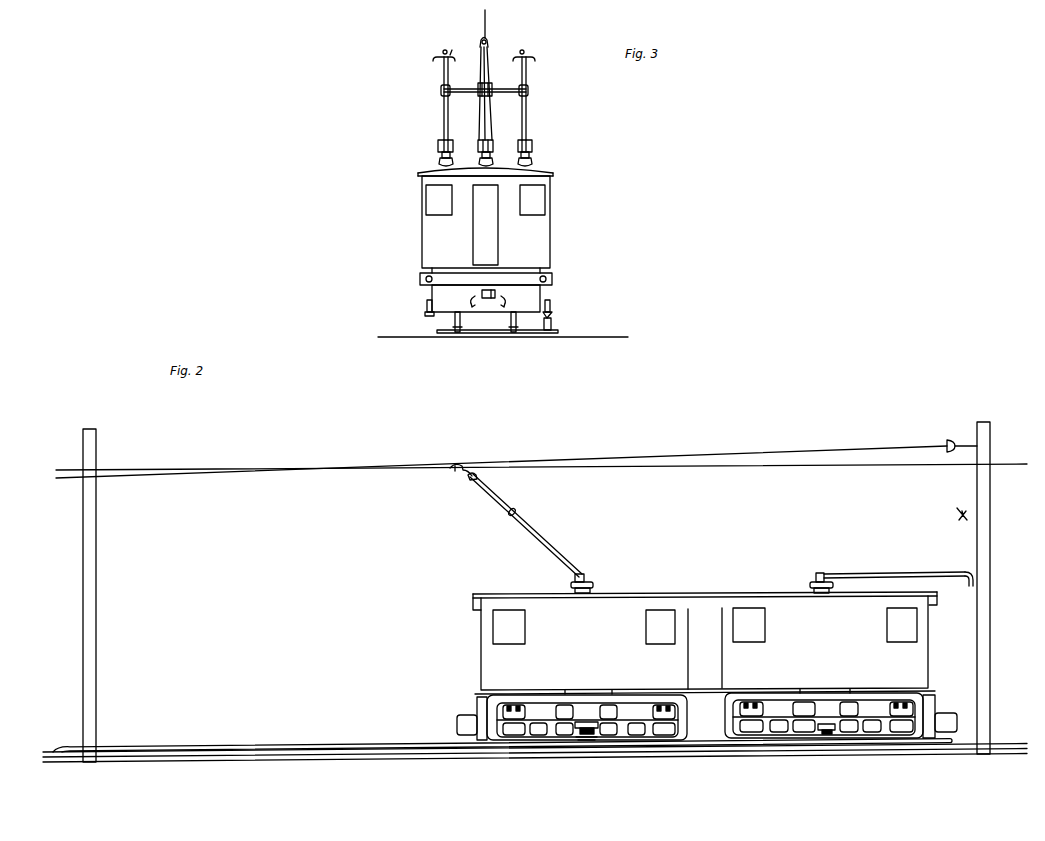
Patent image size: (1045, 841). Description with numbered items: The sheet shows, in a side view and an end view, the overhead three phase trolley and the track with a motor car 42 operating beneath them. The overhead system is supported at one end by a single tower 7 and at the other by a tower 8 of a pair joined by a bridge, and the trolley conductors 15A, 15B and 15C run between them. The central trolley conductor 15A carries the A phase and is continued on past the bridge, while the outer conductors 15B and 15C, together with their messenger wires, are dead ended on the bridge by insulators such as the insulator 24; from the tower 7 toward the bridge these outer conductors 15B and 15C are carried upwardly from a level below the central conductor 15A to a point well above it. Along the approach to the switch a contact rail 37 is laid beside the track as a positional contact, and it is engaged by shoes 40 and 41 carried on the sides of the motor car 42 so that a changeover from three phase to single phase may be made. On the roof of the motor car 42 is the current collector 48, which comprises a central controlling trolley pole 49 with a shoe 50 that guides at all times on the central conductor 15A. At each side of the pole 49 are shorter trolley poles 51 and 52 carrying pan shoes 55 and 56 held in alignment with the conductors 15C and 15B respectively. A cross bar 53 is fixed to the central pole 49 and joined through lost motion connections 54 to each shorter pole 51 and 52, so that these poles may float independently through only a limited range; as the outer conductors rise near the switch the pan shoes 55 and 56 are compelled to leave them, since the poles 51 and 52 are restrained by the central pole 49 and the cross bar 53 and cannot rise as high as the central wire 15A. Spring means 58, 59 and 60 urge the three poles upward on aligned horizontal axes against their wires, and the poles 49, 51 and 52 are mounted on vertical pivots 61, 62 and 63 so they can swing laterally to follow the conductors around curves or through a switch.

In FIG. 2, the tower 7 is at (97, 443).
In FIG. 2, the tower 8 is at (991, 514).
In FIG. 3, the central trolley conductor 15A is at (471, 24).
In FIG. 2, the central trolley conductor 15A is at (57, 468).
In FIG. 3, the trolley conductor 15B is at (442, 50).
In FIG. 3, the trolley conductor 15C is at (526, 50).
In FIG. 2, the trolley conductor 15C is at (62, 480).
In FIG. 2, the insulator 24 is at (954, 440).
In FIG. 2, the contact rail 37 is at (447, 752).
In FIG. 3, the shoe 40 is at (423, 315).
In FIG. 2, the shoe 40 is at (586, 742).
In FIG. 3, the shoe 41 is at (552, 316).
In FIG. 3, the motor car 42 is at (560, 213).
In FIG. 2, the motor car 42 is at (748, 590).
In FIG. 3, the current collector 48 is at (570, 110).
In FIG. 2, the current collector 48 is at (535, 522).
In FIG. 3, the central controlling trolley pole 49 is at (489, 56).
In FIG. 3, the shoe 50 is at (489, 41).
In FIG. 2, the shoe 50 is at (456, 472).
In FIG. 3, the shorter trolley pole 51 is at (443, 80).
In FIG. 3, the shorter trolley pole 52 is at (527, 72).
In FIG. 3, the cross bar 53 is at (470, 92).
In FIG. 3, the lost motion connection 54 is at (440, 92).
In FIG. 2, the lost motion connection 54 is at (509, 514).
In FIG. 3, the pan shoe 55 is at (432, 57).
In FIG. 2, the pan shoe 55 is at (471, 481).
In FIG. 3, the pan shoe 56 is at (536, 57).
In FIG. 3, the spring means 58 is at (437, 146).
In FIG. 3, the spring means 59 is at (482, 140).
In FIG. 3, the spring means 60 is at (534, 146).
In FIG. 3, the vertical pivot 61 is at (438, 160).
In FIG. 2, the vertical pivot 61 is at (596, 585).
In FIG. 3, the vertical pivot 62 is at (492, 162).
In FIG. 3, the vertical pivot 63 is at (534, 160).